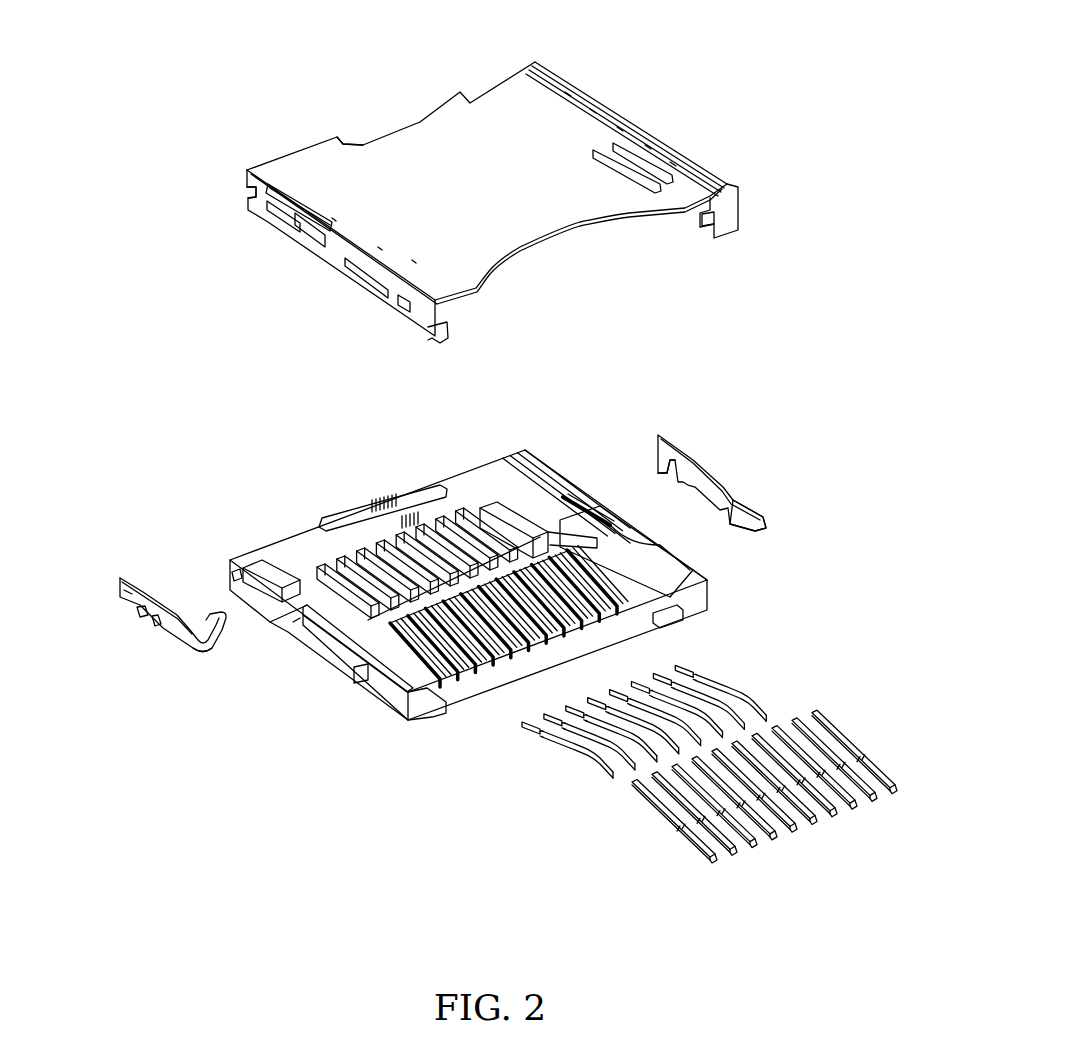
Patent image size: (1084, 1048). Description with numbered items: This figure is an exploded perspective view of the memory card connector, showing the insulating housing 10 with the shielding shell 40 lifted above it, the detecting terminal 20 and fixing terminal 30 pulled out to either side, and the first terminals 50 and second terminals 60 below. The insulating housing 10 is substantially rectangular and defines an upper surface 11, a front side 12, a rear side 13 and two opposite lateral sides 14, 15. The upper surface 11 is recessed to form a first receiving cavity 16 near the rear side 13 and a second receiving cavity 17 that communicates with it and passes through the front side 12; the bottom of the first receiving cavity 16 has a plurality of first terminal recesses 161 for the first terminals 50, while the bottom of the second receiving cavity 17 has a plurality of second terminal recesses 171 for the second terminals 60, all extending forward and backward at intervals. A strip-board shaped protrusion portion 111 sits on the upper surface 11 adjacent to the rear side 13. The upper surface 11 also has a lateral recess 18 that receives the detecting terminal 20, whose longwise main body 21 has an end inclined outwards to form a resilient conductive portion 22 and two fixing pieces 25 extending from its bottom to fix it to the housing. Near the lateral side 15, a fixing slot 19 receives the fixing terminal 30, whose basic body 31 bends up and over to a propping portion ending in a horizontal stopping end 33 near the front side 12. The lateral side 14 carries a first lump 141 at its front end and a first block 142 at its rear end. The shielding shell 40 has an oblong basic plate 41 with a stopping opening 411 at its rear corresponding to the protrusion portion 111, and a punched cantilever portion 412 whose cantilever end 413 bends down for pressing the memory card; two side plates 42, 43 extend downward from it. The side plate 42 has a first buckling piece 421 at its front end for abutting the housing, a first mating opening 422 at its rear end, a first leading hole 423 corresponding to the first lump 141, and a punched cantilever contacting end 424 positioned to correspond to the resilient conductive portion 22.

The insulating housing 10 is at (449, 594).
The upper surface 11 is at (552, 480).
The protrusion portion 111 is at (385, 500).
The front side 12 is at (425, 703).
The rear side 13 is at (273, 532).
The lateral side 14 is at (339, 697).
The first lump 141 is at (358, 682).
The first block 142 is at (225, 585).
The lateral side 15 is at (620, 530).
The first receiving cavity 16 is at (457, 509).
The first terminal recesses 161 is at (428, 490).
The second receiving cavity 17 is at (683, 618).
The second terminal recesses 171 is at (514, 676).
The lateral recess 18 is at (318, 605).
The fixing slot 19 is at (650, 548).
The detecting terminal 20 is at (144, 601).
The main body 21 is at (140, 596).
The resilient conductive portion 22 is at (203, 658).
The fixing pieces 25 is at (152, 630).
The fixing terminal 30 is at (719, 474).
The basic body 31 is at (673, 445).
The stopping end 33 is at (757, 535).
The shielding shell 40 is at (480, 200).
The basic plate 41 is at (573, 115).
The stopping opening 411 is at (365, 135).
The cantilever portion 412 is at (625, 160).
The cantilever end 413 is at (710, 190).
The side plate 42 is at (425, 328).
The first buckling piece 421 is at (398, 310).
The first mating opening 422 is at (250, 193).
The first leading hole 423 is at (365, 283).
The contacting end 424 is at (305, 226).
The side plate 43 is at (745, 216).
The first terminals 50 is at (560, 738).
The second terminals 60 is at (665, 822).